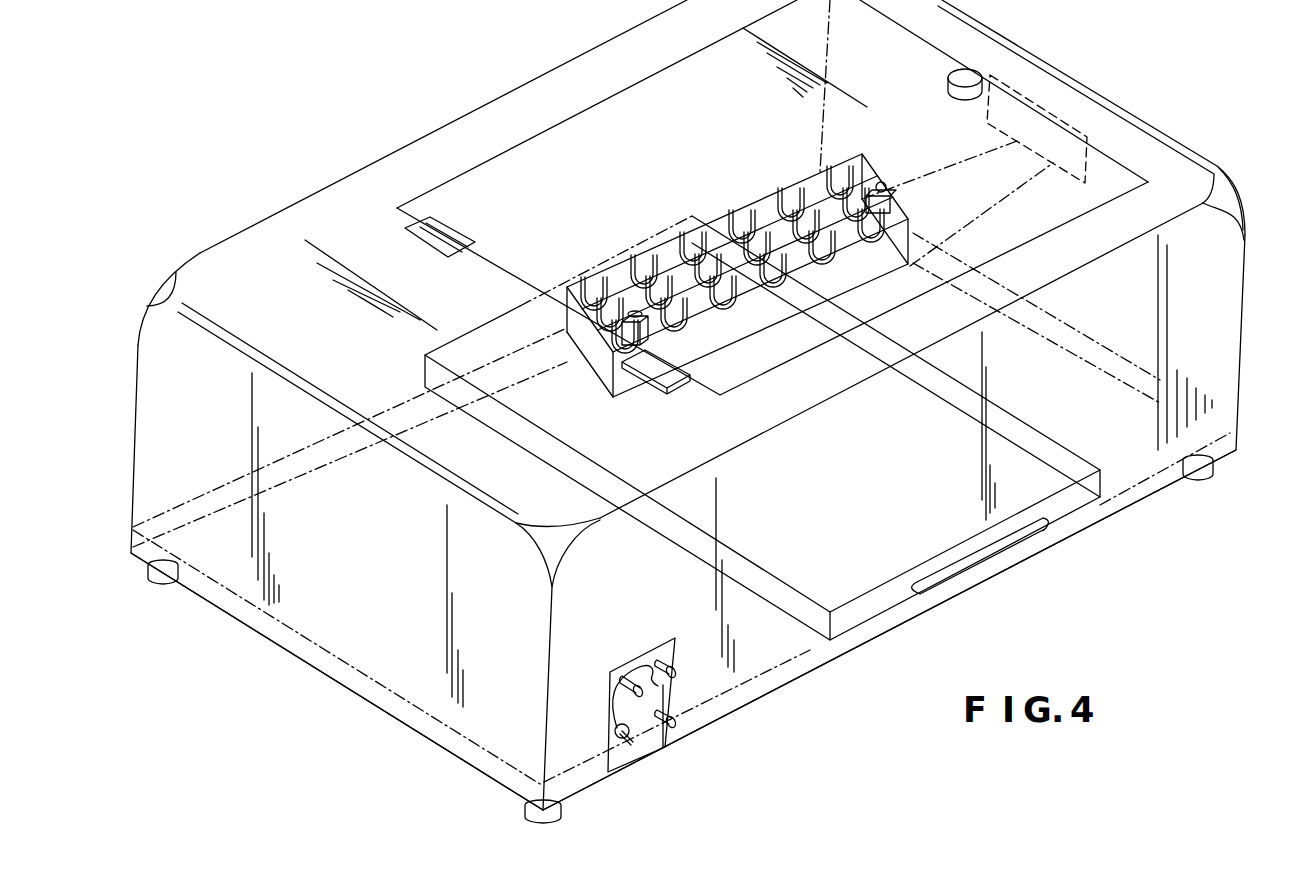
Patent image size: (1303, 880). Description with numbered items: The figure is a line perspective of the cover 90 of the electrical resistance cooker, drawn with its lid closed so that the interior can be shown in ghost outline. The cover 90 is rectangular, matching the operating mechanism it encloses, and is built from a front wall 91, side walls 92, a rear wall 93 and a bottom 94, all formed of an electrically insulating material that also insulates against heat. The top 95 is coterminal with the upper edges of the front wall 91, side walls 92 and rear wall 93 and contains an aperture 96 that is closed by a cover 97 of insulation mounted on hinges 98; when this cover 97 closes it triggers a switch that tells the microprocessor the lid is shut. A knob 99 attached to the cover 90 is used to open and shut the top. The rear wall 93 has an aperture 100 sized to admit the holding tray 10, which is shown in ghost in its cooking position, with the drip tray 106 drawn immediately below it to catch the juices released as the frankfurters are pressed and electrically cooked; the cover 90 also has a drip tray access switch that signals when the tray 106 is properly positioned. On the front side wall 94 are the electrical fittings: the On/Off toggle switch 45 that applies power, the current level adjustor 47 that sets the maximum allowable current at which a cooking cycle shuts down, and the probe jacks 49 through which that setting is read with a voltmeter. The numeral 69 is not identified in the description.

The holding tray 10 is at (838, 178).
The On/Off toggle switch 45 is at (614, 738).
The current level adjustor 47 is at (618, 688).
The probe jacks 49 is at (676, 665).
The cable 69 is at (648, 693).
The cover 90 is at (137, 434).
The front wall 91 is at (263, 580).
The side walls 92 is at (378, 162).
The rear wall 93 is at (1163, 132).
The bottom 94 is at (790, 682).
The top 95 is at (280, 263).
The aperture 96 is at (578, 110).
The cover of insulation 97 is at (642, 173).
The hinges 98 is at (426, 250).
The knob 99 is at (968, 72).
The aperture 100 is at (1052, 130).
The tray 106 is at (862, 605).